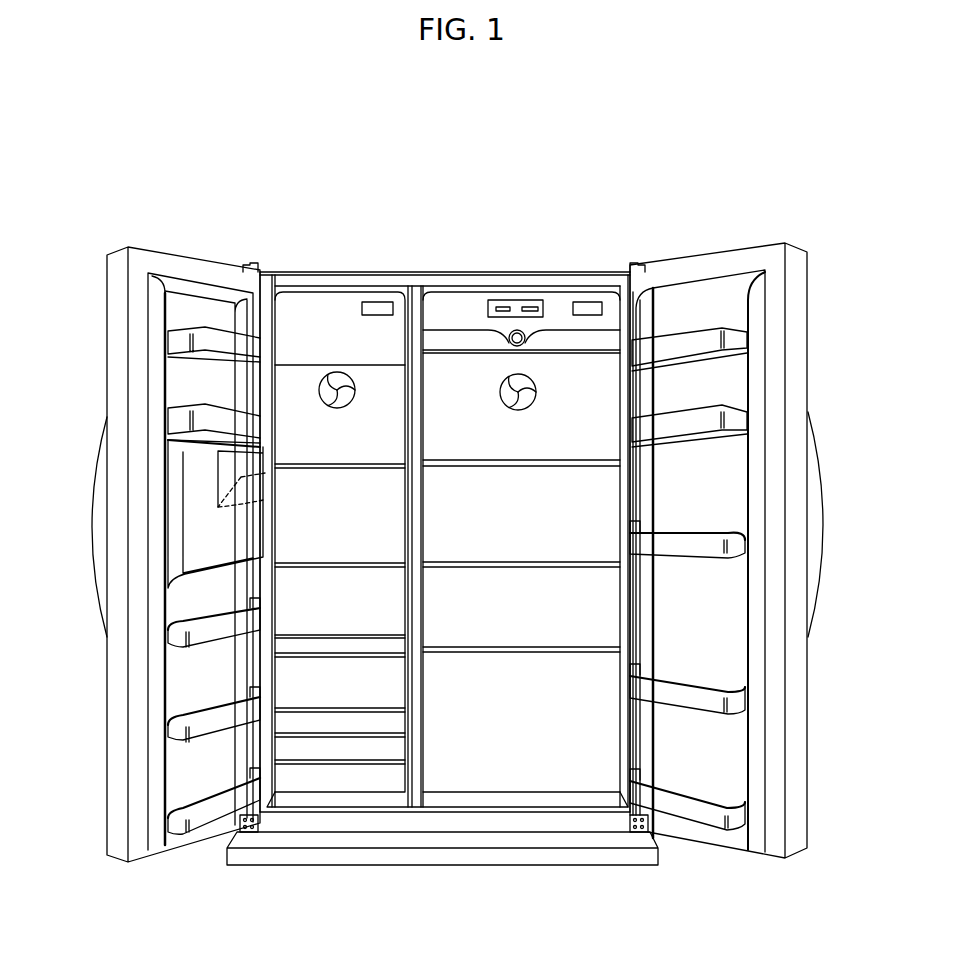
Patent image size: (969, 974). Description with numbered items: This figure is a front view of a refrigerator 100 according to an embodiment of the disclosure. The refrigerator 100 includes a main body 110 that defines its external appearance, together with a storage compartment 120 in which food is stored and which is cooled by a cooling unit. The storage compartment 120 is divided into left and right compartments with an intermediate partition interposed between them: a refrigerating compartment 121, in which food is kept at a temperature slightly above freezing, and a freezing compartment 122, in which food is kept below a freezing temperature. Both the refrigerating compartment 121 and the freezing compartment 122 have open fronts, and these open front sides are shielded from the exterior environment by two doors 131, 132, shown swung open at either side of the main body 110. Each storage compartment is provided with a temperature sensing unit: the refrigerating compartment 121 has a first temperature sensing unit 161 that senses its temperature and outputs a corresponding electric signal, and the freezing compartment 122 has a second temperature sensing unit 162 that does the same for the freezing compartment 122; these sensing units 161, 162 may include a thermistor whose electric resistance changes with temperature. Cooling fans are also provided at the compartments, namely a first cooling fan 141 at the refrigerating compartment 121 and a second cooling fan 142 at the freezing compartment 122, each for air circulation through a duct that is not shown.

The refrigerator 100 is at (420, 191).
The main body 110 is at (534, 209).
The storage compartment 120 is at (482, 924).
The refrigerating compartment 121 is at (457, 688).
The freezing compartment 122 is at (396, 686).
The door 131 is at (803, 766).
The door 132 is at (112, 759).
The first cooling fan 141 is at (521, 381).
The second cooling fan 142 is at (330, 378).
The first temperature sensing unit 161 is at (590, 301).
The second temperature sensing unit 162 is at (374, 301).